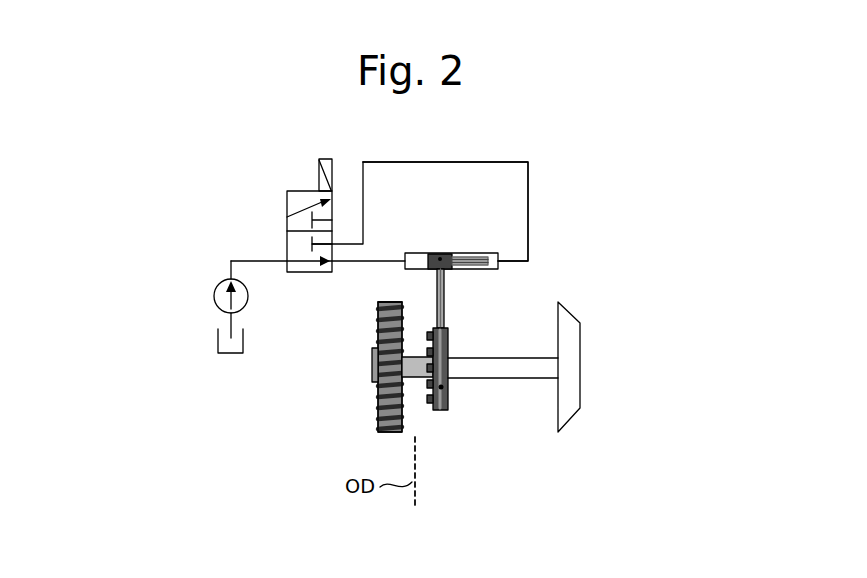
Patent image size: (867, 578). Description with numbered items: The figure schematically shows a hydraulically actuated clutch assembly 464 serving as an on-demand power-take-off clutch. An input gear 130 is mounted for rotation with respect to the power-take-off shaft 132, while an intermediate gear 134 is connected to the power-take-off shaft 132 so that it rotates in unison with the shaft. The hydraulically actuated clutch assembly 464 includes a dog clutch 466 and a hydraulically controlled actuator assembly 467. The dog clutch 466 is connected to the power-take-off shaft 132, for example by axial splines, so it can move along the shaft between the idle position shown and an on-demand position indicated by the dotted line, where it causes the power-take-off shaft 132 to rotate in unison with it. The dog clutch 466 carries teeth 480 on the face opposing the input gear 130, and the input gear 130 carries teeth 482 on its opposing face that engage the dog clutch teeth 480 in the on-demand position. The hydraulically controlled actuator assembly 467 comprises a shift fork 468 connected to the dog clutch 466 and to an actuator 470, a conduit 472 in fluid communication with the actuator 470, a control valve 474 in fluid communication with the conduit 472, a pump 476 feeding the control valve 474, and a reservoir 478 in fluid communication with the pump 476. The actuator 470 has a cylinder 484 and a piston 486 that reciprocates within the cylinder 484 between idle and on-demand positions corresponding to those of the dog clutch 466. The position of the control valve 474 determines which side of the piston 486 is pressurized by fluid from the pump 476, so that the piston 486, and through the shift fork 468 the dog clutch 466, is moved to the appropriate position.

The hydraulically actuated clutch assembly 464 is at (607, 143).
The hydraulically controlled actuator assembly 467 is at (180, 403).
The actuator 470 is at (485, 198).
The conduit 472 is at (531, 200).
The control valve 474 is at (286, 215).
The pump 476 is at (213, 299).
The reservoir 478 is at (231, 354).
The teeth 480 is at (426, 395).
The teeth 482 is at (403, 332).
The cylinder 484 is at (486, 253).
The piston 486 is at (440, 254).
The shift fork 468 is at (450, 296).
The input gear 130 is at (378, 424).
The power-take-off shaft 132 is at (542, 357).
The intermediate gear 134 is at (570, 418).
The dog clutch 466 is at (441, 389).